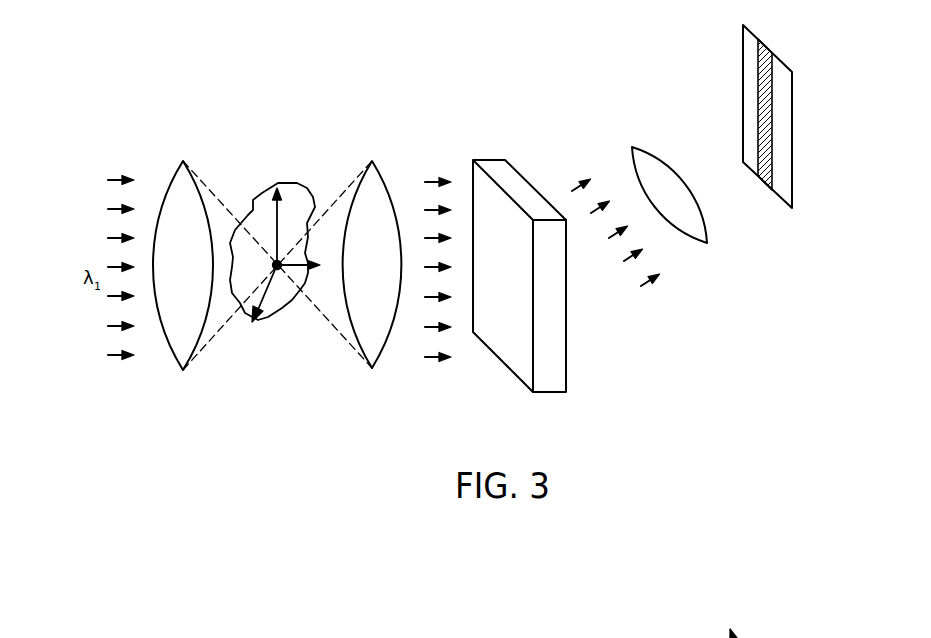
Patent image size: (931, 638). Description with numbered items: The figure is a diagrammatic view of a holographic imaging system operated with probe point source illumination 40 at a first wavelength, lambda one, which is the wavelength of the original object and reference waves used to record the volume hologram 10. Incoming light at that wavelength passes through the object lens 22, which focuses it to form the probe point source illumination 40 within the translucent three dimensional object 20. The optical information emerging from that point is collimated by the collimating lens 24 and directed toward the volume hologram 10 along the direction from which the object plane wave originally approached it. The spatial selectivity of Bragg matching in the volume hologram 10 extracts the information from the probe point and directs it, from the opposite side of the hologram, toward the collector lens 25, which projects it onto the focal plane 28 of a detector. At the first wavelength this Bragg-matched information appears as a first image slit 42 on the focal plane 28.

The volume hologram 10 is at (567, 325).
The translucent three dimensional object 20 is at (303, 181).
The object lens 22 is at (173, 175).
The collimating lens 24 is at (375, 163).
The collector lens 25 is at (707, 243).
The focal plane of a detector 28 is at (743, 98).
The probe point source illumination 40 is at (278, 270).
The first image slit 42 is at (767, 50).